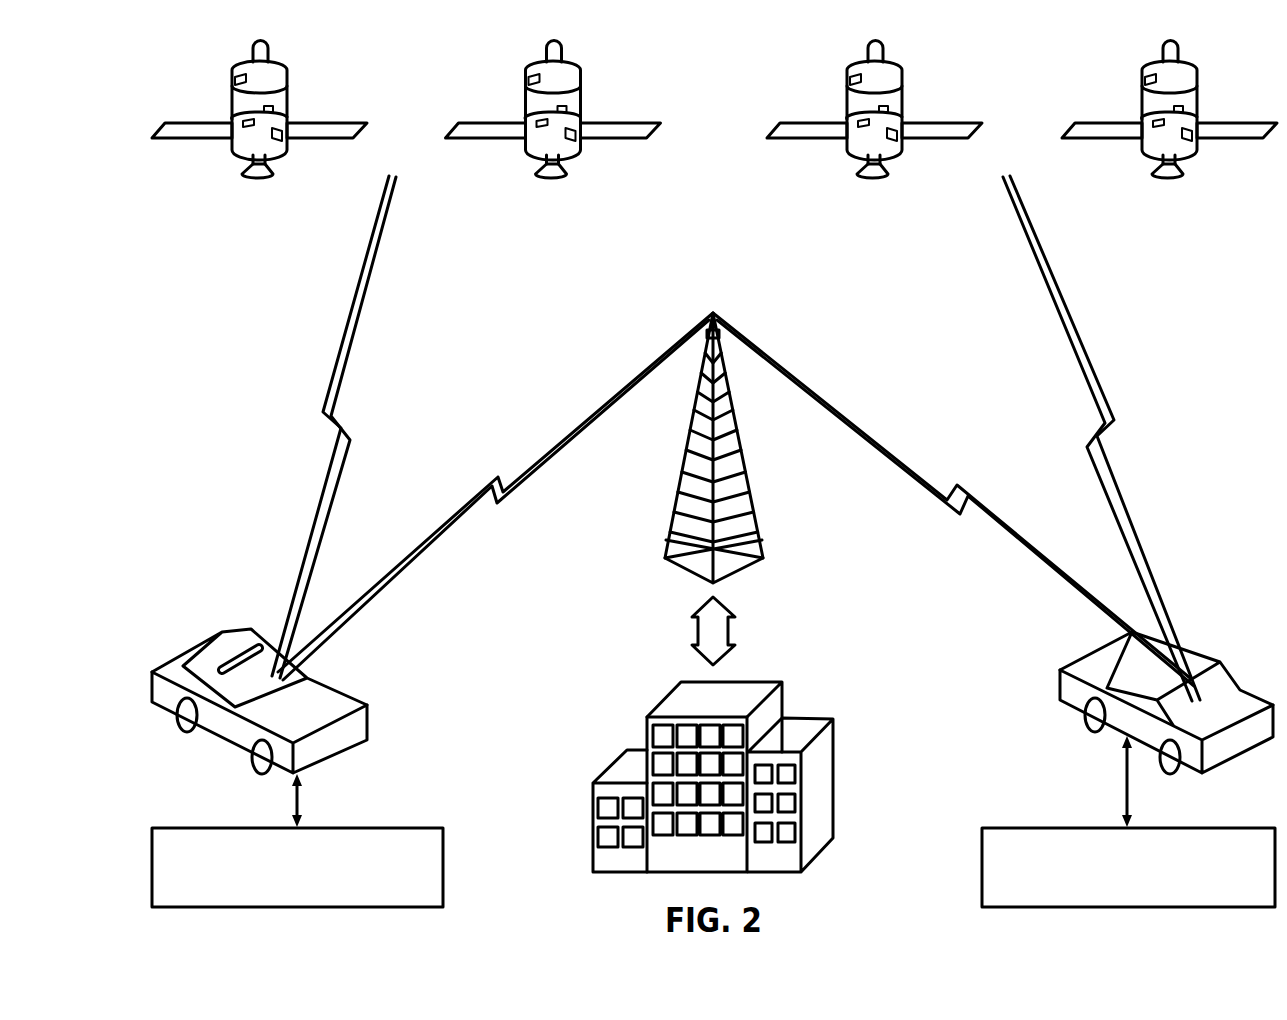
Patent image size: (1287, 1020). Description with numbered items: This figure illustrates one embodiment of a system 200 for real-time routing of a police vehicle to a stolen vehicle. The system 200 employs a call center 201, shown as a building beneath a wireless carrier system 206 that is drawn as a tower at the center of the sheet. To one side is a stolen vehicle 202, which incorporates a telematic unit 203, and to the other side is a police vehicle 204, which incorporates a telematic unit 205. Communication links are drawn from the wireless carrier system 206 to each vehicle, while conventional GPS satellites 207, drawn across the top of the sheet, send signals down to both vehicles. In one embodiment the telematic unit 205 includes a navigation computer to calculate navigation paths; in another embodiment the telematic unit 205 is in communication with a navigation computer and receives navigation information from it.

The system 200 is at (737, 264).
The call center 201 is at (758, 682).
The stolen vehicle 202 is at (1220, 662).
The telematic unit 203 is at (1149, 897).
The police vehicle 204 is at (204, 644).
The telematic unit 205 is at (321, 897).
The wireless carrier system 206 is at (762, 550).
The GPS satellites 207 is at (1266, 98).